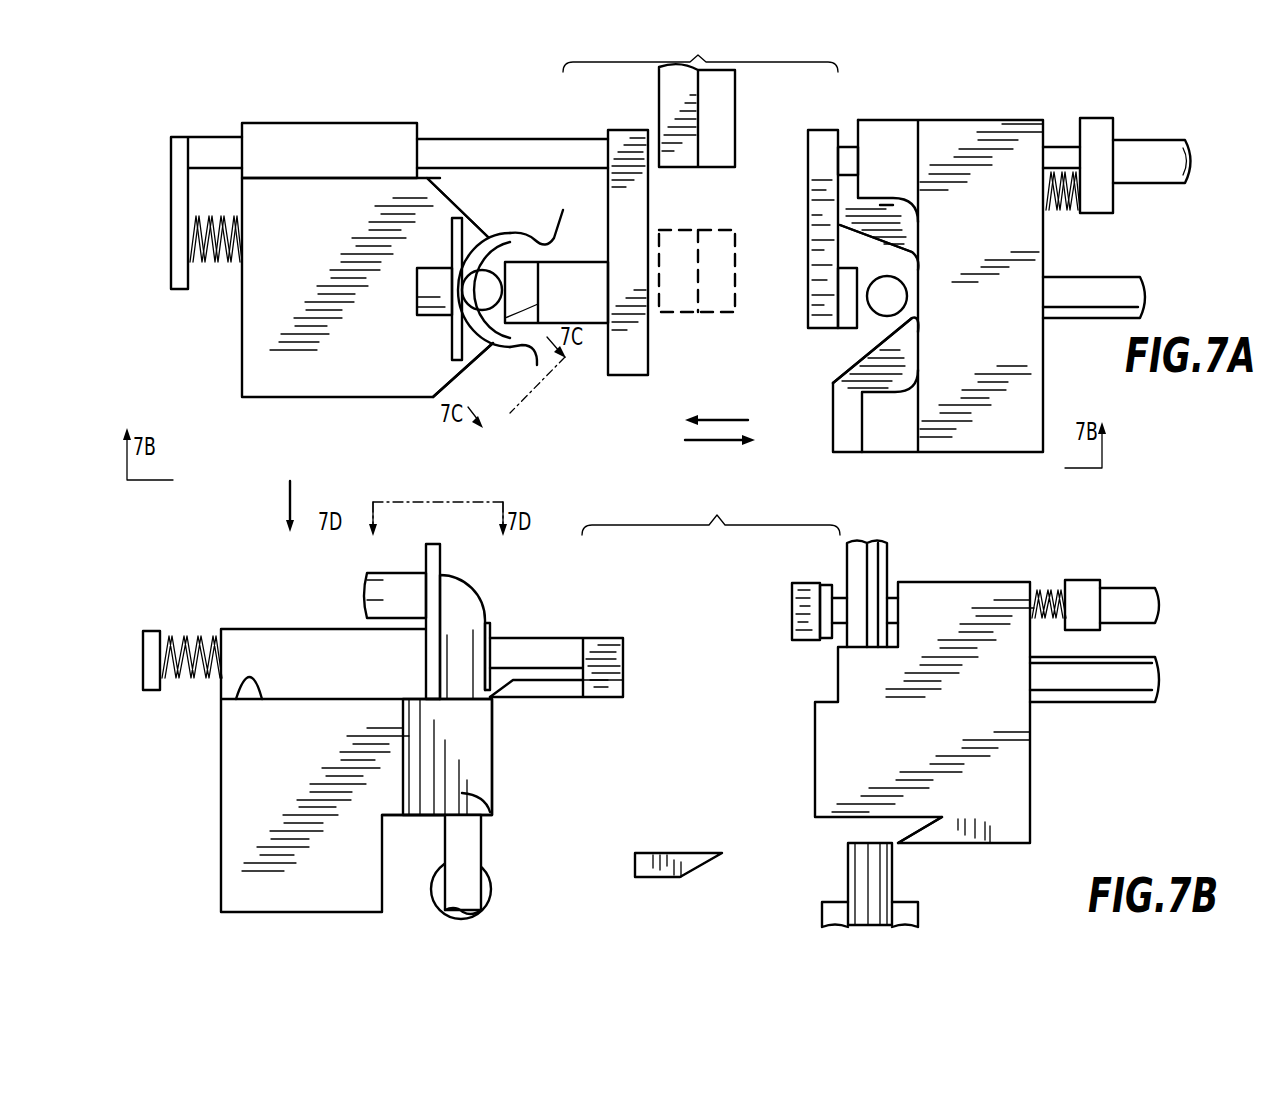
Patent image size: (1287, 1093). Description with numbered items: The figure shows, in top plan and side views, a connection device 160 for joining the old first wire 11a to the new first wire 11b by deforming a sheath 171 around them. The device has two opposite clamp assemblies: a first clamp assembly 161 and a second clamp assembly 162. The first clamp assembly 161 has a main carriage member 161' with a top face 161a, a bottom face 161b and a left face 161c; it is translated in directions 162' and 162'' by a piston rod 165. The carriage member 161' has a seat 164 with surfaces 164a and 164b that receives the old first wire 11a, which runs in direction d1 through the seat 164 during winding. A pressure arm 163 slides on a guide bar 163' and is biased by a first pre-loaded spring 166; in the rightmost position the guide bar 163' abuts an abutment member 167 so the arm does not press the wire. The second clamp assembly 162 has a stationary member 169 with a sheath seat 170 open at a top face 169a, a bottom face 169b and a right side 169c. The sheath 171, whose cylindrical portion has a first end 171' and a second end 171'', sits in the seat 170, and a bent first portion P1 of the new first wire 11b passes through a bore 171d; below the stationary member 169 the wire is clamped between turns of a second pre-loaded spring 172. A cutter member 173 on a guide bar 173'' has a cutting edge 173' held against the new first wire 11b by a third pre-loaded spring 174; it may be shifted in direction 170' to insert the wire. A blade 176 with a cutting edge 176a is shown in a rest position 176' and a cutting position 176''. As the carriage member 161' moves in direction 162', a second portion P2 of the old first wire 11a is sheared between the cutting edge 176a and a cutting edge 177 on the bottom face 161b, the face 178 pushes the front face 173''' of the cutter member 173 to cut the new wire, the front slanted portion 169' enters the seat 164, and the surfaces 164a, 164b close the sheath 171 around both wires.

In FIG. 7A, the connection device 160 is at (157, 113).
In FIG. 7A, the second clamp assembly 162 is at (329, 132).
In FIG. 7A, the third pre-loaded spring 174 is at (236, 262).
In FIG. 7A, the stationary member 169 is at (334, 287).
In FIG. 7B, the stationary member 169 is at (317, 770).
In FIG. 7A, the front slanted portion 169' is at (455, 287).
In FIG. 7B, the top face 169a is at (236, 699).
In FIG. 7B, the bottom face 169b is at (440, 816).
In FIG. 7B, the right side 169c is at (463, 793).
In FIG. 7A, the new first wire 11b is at (493, 300).
In FIG. 7B, the new first wire 11b is at (365, 578).
In FIG. 7A, the old first wire 11a is at (898, 306).
In FIG. 7B, the old first wire 11a is at (878, 563).
In FIG. 7A, the sheath 171 is at (510, 277).
In FIG. 7A, the first end 171' is at (517, 361).
In FIG. 7B, the first end 171' is at (477, 757).
In FIG. 7A, the second end 171'' is at (556, 213).
In FIG. 7B, the bore 171d is at (462, 600).
In FIG. 7A, the sheath seat 170 is at (556, 274).
In FIG. 7B, the rod direction 170' is at (312, 501).
In FIG. 7B, the second pre-loaded spring 172 is at (493, 880).
In FIG. 7B, the cutter member 173 is at (602, 715).
In FIG. 7A, the cutting edge 173' is at (560, 292).
In FIG. 7B, the cutting edge 173' is at (536, 717).
In FIG. 7A, the guide bar 173'' is at (512, 127).
In FIG. 7B, the guide bar 173'' is at (556, 638).
In FIG. 7A, the front face 173''' is at (657, 252).
In FIG. 7B, the front face 173''' is at (639, 666).
In FIG. 7A, the blade 176 is at (671, 115).
In FIG. 7B, the blade 176 is at (663, 843).
In FIG. 7A, the solid blade 176' is at (763, 115).
In FIG. 7A, the cutting edge 176a is at (725, 118).
In FIG. 7B, the cutting edge 176a is at (713, 867).
In FIG. 7A, the dashed blade 176'' is at (717, 247).
In FIG. 7A, the direction 162' is at (716, 400).
In FIG. 7A, the direction 162'' is at (713, 457).
In FIG. 7A, the first clamp assembly 161 is at (989, 261).
In FIG. 7B, the first clamp assembly 161 is at (996, 715).
In FIG. 7A, the main carriage member 161' is at (1070, 368).
In FIG. 7B, the main carriage member 161' is at (1055, 760).
In FIG. 7B, the top face 161a is at (943, 582).
In FIG. 7B, the bottom face 161b is at (822, 817).
In FIG. 7B, the left face 161c is at (812, 763).
In FIG. 7A, the pressure arm 163 is at (806, 229).
In FIG. 7B, the pressure arm 163 is at (819, 611).
In FIG. 7A, the guide bar 163' is at (1054, 148).
In FIG. 7A, the seat 164 is at (860, 343).
In FIG. 7A, the surface 164a is at (917, 250).
In FIG. 7A, the surface 164b is at (918, 323).
In FIG. 7A, the piston rod 165 is at (1133, 283).
In FIG. 7A, the first pre-loaded spring 166 is at (1058, 216).
In FIG. 7A, the abutment member 167 is at (1157, 168).
In FIG. 7B, the cutting edge 177 is at (937, 845).
In FIG. 7A, the face 178 is at (858, 160).
In FIG. 7B, the first portion P1 is at (440, 598).
In FIG. 7B, the second portion P2 is at (852, 867).
In FIG. 7B, the direction d1 is at (933, 884).